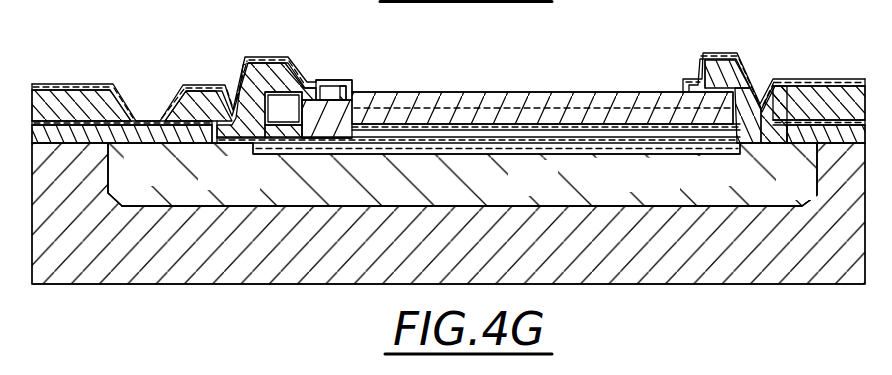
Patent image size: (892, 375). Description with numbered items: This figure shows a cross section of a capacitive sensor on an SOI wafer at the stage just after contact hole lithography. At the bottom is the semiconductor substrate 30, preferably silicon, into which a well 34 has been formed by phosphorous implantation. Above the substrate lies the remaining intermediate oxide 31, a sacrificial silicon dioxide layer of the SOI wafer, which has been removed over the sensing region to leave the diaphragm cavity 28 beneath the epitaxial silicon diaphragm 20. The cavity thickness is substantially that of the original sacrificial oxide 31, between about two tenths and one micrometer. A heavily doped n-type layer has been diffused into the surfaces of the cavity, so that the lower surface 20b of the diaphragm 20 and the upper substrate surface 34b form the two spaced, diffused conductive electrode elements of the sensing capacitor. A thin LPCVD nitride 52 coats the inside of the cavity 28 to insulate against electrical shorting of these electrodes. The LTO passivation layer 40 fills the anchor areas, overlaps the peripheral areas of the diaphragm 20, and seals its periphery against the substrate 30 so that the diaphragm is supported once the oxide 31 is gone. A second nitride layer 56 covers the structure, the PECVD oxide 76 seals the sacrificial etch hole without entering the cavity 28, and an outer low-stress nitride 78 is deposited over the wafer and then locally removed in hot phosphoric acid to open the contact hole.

The epitaxial silicon diaphragm 20 is at (507, 98).
The lower surface of the diaphragm 20b is at (433, 115).
The diaphragm cavity 28 is at (594, 131).
The semiconductor substrate 30 is at (620, 278).
The intermediate oxide layer 31 is at (102, 133).
The well 34 is at (552, 194).
The upper substrate surface 34b is at (277, 152).
The LTO passivation layer 40 is at (67, 90).
The LPCVD nitride layer 52 is at (727, 74).
The second nitride layer 56 is at (774, 64).
The PECVD oxide layer 76 is at (323, 96).
The low-stress nitride layer 78 is at (103, 86).